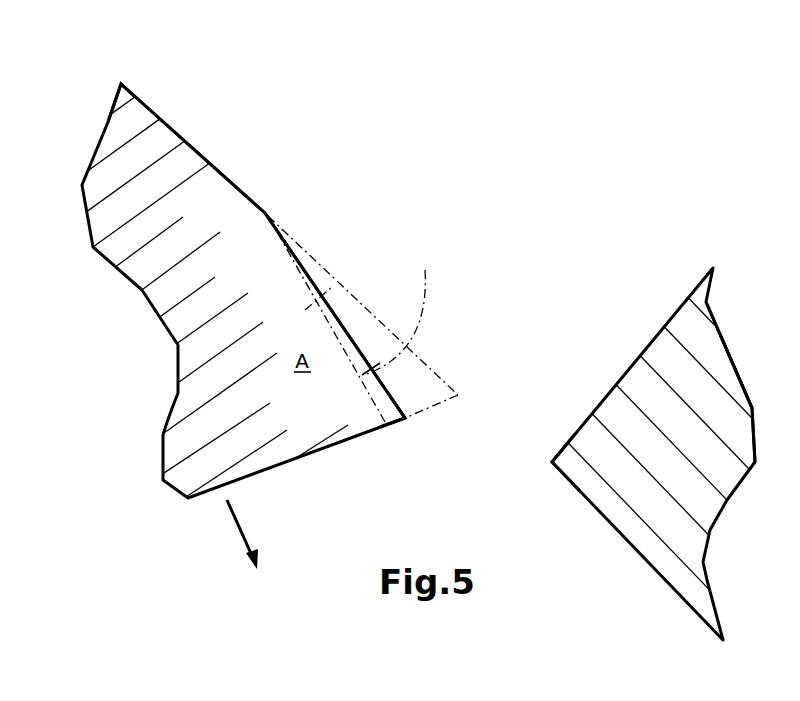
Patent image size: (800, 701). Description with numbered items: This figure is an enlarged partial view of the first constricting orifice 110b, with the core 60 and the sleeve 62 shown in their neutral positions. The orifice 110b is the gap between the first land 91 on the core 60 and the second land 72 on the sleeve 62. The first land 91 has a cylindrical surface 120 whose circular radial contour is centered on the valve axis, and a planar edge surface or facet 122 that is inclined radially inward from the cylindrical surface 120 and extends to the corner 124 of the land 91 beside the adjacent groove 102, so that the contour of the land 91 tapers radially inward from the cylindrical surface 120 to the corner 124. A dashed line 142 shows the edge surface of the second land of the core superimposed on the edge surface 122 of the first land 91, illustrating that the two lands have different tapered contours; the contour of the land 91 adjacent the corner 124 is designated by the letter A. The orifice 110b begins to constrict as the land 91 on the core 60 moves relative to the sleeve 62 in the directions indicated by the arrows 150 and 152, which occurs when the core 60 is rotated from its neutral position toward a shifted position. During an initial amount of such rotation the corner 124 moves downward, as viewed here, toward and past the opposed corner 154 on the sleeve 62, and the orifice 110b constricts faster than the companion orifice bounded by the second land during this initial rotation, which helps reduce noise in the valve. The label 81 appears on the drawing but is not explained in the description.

The core 60 is at (112, 117).
The first land 91 is at (118, 152).
The cylindrical surface 120 is at (193, 143).
The upper portion 81 is at (347, 180).
The facet 122 is at (312, 277).
The dashed line 142 is at (400, 311).
The corner 124 is at (405, 418).
The groove 102 is at (324, 532).
The arrow 150 is at (230, 508).
The first constricting orifice 110b is at (534, 396).
The sleeve 62 is at (730, 337).
The second land 72 is at (710, 370).
The corner 154 is at (552, 462).
The arrow 152 is at (786, 119).